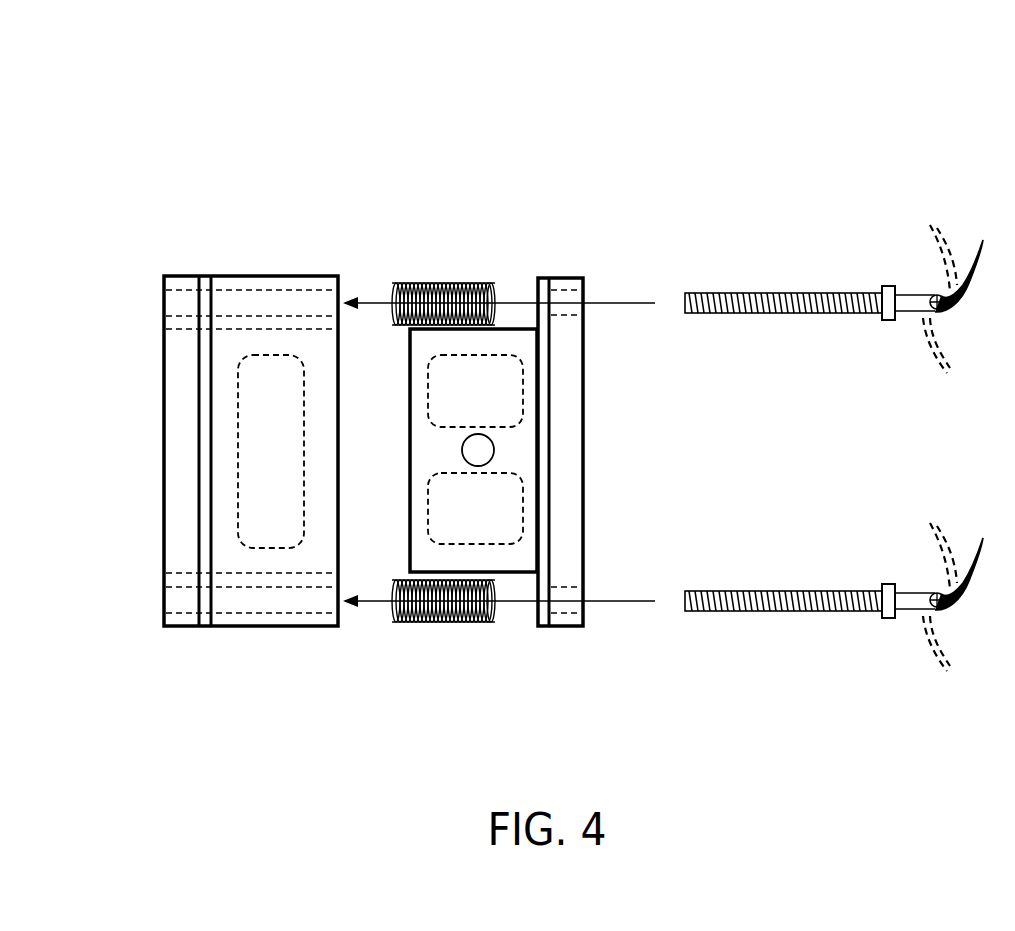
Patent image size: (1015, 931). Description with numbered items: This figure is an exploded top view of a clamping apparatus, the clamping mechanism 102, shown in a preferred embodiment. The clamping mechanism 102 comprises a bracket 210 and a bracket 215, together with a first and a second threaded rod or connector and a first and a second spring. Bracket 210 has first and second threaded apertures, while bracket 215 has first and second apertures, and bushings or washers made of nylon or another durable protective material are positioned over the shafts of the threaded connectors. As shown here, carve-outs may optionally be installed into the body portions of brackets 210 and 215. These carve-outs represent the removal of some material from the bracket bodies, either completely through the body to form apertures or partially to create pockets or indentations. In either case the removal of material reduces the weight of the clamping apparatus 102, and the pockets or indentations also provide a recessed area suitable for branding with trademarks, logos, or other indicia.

The clamping mechanism 102 is at (848, 94).
The bracket 210 is at (178, 275).
The bracket 215 is at (575, 277).